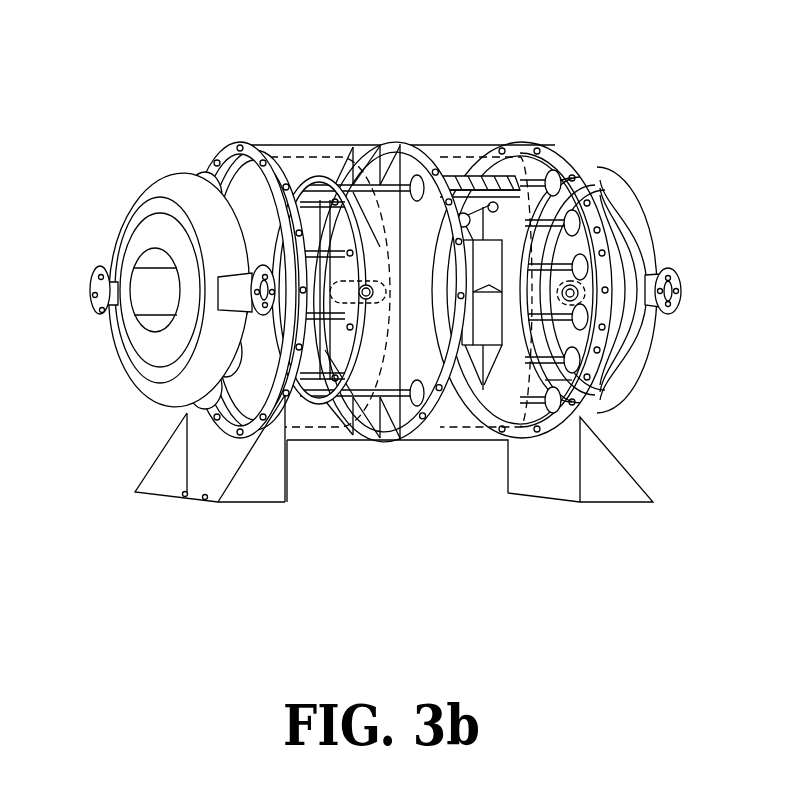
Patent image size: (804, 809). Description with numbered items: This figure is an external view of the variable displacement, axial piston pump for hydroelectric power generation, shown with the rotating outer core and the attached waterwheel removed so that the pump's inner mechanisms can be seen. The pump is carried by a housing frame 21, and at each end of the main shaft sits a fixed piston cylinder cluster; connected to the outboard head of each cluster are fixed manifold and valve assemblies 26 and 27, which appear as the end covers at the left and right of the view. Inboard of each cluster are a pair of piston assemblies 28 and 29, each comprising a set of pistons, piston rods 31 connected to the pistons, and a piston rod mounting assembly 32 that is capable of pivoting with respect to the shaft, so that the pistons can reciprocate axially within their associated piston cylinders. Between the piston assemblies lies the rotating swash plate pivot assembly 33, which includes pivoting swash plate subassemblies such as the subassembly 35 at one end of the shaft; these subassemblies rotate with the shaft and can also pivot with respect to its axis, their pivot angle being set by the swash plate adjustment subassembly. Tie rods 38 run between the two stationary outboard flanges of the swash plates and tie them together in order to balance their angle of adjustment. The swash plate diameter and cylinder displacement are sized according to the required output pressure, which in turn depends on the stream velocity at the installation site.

The housing frame 21 is at (587, 397).
The fixed manifold and valve assembly 26 is at (150, 207).
The fixed manifold and valve assembly 27 is at (623, 196).
The piston assembly 28 is at (300, 163).
The piston assembly 29 is at (570, 385).
The piston rods 31 is at (330, 378).
The piston rod mounting assembly 32 is at (555, 144).
The rotating swash plate pivot assembly 33 is at (465, 162).
The pivoting swash plate subassembly 35 is at (488, 378).
The tie rods 38 is at (397, 144).